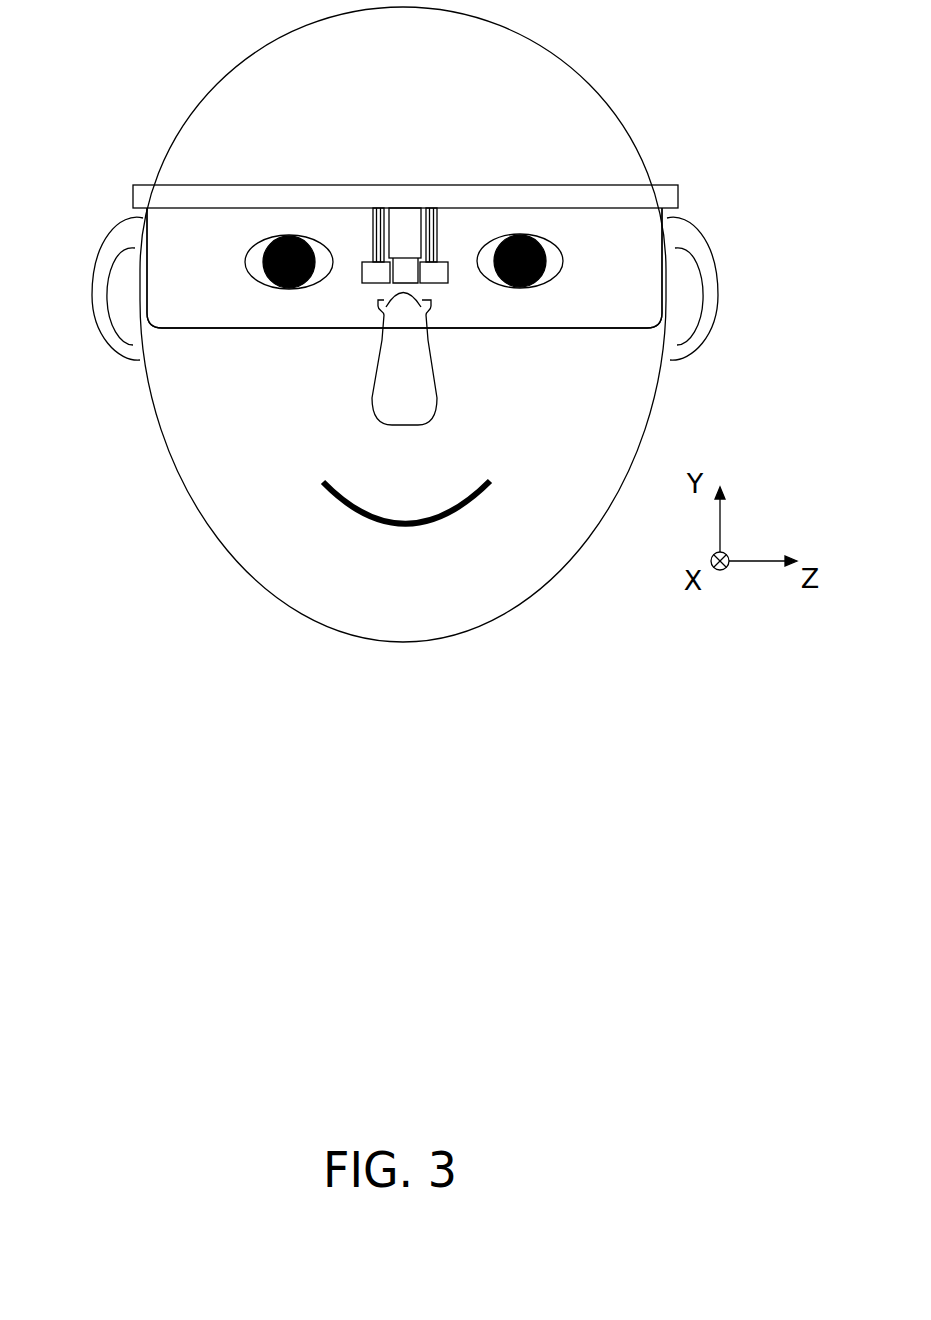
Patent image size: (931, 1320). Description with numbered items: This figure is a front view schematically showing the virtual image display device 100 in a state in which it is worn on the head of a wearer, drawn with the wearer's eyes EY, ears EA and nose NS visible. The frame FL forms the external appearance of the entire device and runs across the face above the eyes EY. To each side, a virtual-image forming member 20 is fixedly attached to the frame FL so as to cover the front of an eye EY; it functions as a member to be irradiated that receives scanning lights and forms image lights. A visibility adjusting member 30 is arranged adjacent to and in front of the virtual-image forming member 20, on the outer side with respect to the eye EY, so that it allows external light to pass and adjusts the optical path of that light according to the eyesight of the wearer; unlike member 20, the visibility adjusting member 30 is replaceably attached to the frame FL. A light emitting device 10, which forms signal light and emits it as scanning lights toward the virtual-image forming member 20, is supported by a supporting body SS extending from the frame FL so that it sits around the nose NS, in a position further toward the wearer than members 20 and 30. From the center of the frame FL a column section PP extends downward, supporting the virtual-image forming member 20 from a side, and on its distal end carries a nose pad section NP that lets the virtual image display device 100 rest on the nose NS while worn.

The virtual image display device 100 is at (371, 199).
The light emitting device 10 is at (372, 275).
The virtual-image forming member 20 is at (278, 228).
The visibility adjusting member 30 is at (245, 228).
The frame FL is at (323, 185).
The column section PP is at (402, 235).
The supporting body SS is at (377, 240).
The eye EY is at (255, 255).
The ear EA is at (117, 232).
The nose NS is at (393, 377).
The nose pad section NP is at (403, 283).